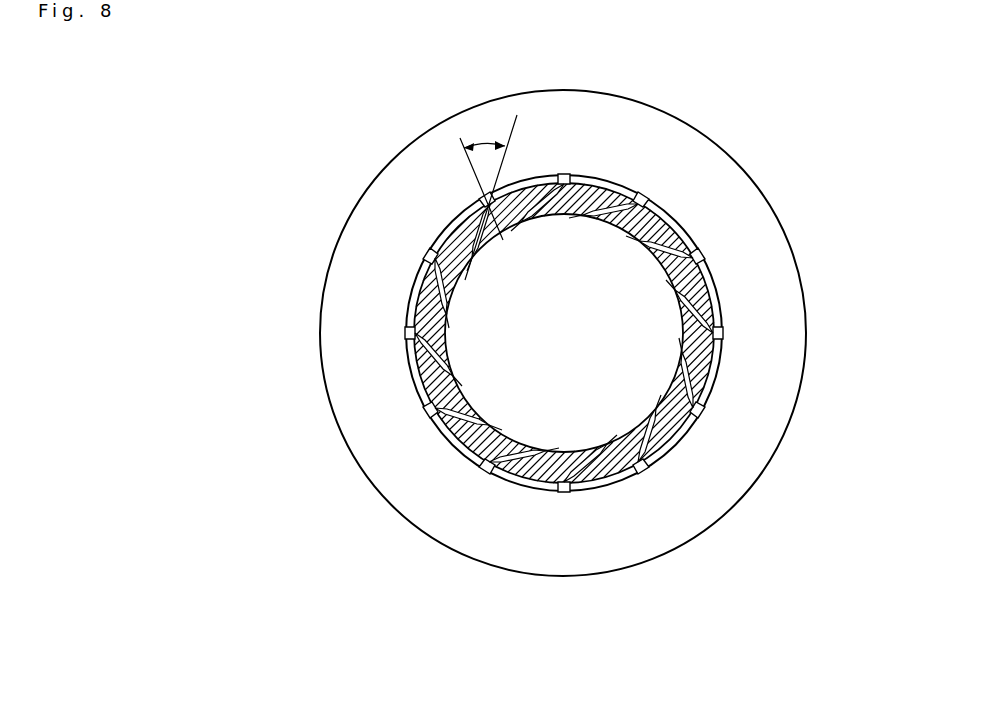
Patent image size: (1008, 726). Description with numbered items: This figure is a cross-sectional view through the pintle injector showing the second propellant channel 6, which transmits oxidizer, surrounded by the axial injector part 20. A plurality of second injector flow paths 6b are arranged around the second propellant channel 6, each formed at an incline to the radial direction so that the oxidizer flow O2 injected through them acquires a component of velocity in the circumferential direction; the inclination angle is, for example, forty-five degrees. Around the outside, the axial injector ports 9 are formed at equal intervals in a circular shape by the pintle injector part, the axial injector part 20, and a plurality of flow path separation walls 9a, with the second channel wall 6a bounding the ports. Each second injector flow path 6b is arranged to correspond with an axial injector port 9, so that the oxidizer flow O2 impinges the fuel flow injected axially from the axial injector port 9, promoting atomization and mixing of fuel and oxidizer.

The axial injector part 20 is at (739, 230).
The second propellant channel 6 is at (580, 403).
The second channel wall 6a is at (718, 296).
The second injector flow path 6b is at (584, 188).
The axial injector port 9 is at (643, 197).
The flow path separation wall 9a is at (713, 372).
The oxidizer flow O2 is at (407, 300).